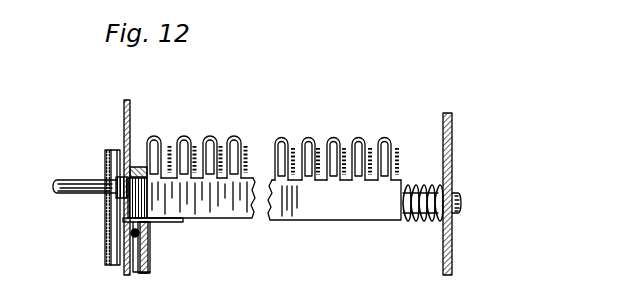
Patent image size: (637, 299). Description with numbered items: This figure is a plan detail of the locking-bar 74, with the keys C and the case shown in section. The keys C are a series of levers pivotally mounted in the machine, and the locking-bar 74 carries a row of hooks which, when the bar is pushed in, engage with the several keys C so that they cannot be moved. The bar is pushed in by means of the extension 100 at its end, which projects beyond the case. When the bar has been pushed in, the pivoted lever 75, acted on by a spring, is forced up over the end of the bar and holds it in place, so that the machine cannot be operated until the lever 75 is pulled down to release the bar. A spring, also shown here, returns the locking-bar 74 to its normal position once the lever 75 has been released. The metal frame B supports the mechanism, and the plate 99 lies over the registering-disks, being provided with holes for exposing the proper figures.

The metal frame B is at (130, 118).
The plate over the registering-disks 99 is at (105, 236).
The extension 100 is at (83, 173).
The pivoted lever 75 is at (148, 250).
The locking-bar 74 is at (274, 199).
The keys C is at (218, 144).